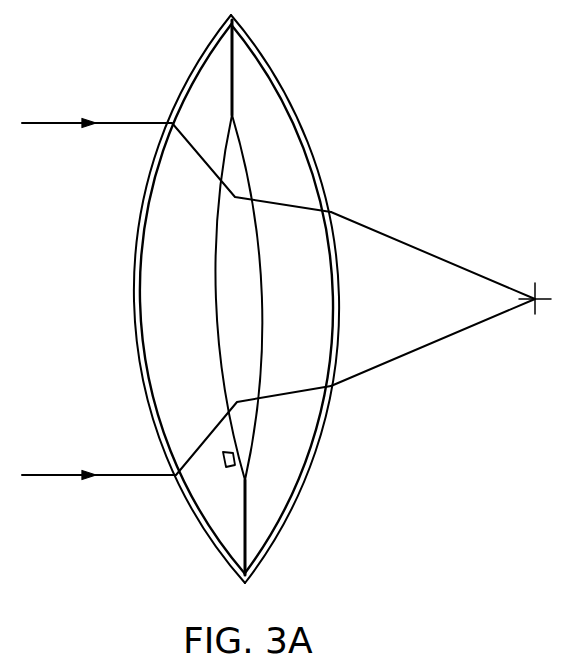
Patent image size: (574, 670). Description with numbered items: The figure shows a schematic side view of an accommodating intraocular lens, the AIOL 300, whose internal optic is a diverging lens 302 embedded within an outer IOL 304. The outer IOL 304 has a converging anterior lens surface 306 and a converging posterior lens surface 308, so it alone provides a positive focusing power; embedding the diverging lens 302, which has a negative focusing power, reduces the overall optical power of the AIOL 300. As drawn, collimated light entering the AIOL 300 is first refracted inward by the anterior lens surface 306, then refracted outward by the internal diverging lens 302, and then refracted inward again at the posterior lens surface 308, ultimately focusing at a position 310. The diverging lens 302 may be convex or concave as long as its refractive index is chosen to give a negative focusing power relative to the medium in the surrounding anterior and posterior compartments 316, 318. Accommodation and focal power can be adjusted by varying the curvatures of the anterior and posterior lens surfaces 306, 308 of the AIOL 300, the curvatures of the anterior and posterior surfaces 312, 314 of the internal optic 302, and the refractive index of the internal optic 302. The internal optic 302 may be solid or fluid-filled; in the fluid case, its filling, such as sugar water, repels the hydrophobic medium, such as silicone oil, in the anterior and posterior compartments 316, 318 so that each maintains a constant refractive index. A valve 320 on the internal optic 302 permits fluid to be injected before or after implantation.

The AIOL 300 is at (412, 73).
The diverging lens 302 is at (235, 160).
The outer IOL 304 is at (278, 533).
The anterior lens surface 306 is at (198, 62).
The posterior lens surface 308 is at (253, 45).
The position 310 is at (535, 286).
The anterior surface of the internal optic 312 is at (217, 263).
The posterior surface of the internal optic 314 is at (263, 283).
The anterior compartment 316 is at (173, 388).
The posterior compartment 318 is at (286, 454).
The valve 320 is at (231, 470).